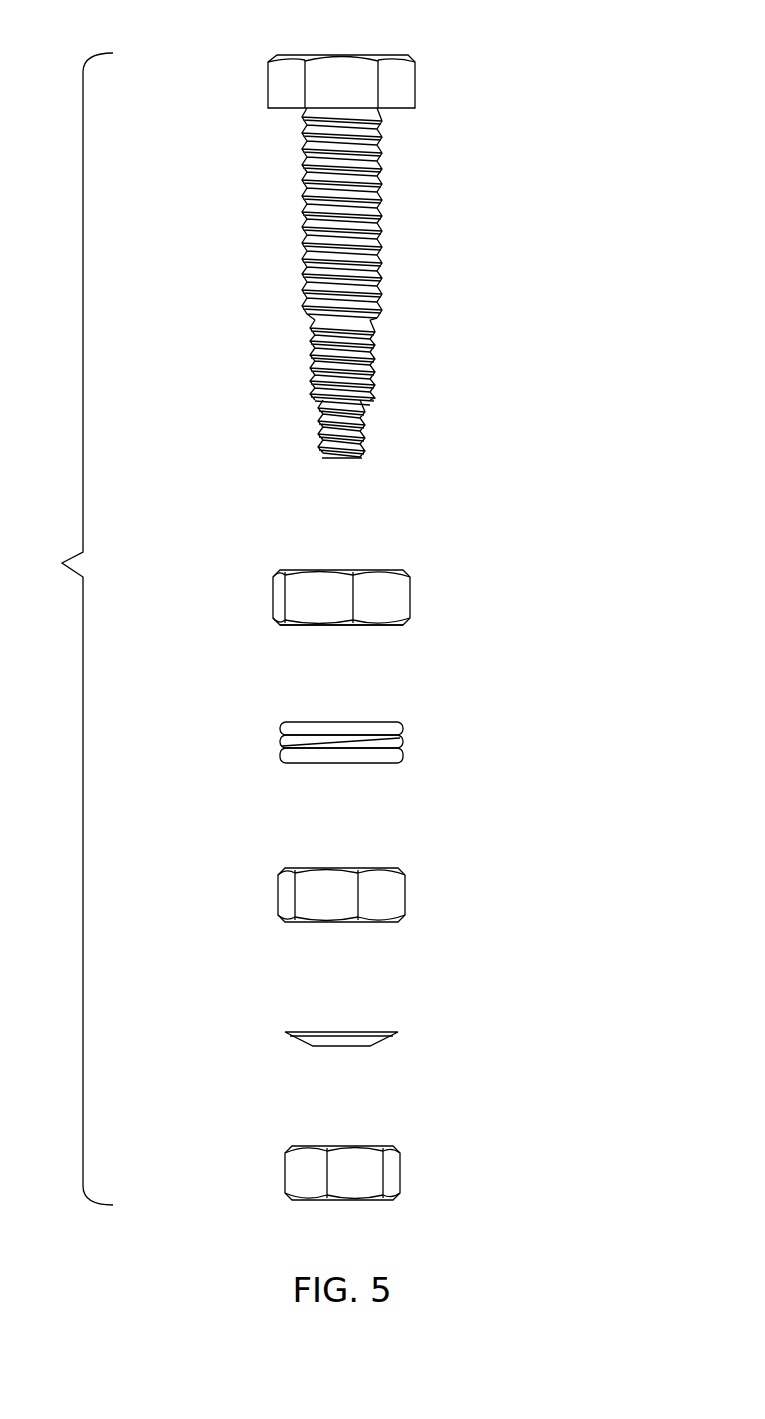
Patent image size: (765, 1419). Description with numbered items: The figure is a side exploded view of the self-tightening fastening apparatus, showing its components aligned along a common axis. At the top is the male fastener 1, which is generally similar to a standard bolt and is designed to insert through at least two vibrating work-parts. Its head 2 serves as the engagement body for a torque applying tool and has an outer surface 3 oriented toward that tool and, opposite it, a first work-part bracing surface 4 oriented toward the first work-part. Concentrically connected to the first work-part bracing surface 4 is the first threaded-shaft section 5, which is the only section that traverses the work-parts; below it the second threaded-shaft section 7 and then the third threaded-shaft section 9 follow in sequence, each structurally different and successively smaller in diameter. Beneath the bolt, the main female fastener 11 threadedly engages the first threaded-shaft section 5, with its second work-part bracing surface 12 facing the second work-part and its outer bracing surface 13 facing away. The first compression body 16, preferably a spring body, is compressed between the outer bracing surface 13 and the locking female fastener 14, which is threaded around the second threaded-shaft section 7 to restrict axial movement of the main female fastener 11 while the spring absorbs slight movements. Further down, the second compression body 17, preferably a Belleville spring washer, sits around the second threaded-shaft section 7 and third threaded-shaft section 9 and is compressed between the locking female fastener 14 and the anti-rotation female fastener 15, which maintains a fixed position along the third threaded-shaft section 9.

The male fastener 1 is at (485, 217).
The head 2 is at (272, 97).
The outer surface 3 is at (298, 55).
The first work-part bracing surface 4 is at (405, 110).
The first threaded-shaft section 5 is at (302, 245).
The second threaded-shaft section 7 is at (312, 362).
The third threaded-shaft section 9 is at (320, 455).
The main female fastener 11 is at (408, 610).
The second work-part bracing surface 12 is at (385, 570).
The outer bracing surface 13 is at (398, 626).
The locking female fastener 14 is at (401, 907).
The anti-rotation female fastener 15 is at (394, 1183).
The first compression body 16 is at (283, 730).
The second compression body 17 is at (283, 1032).